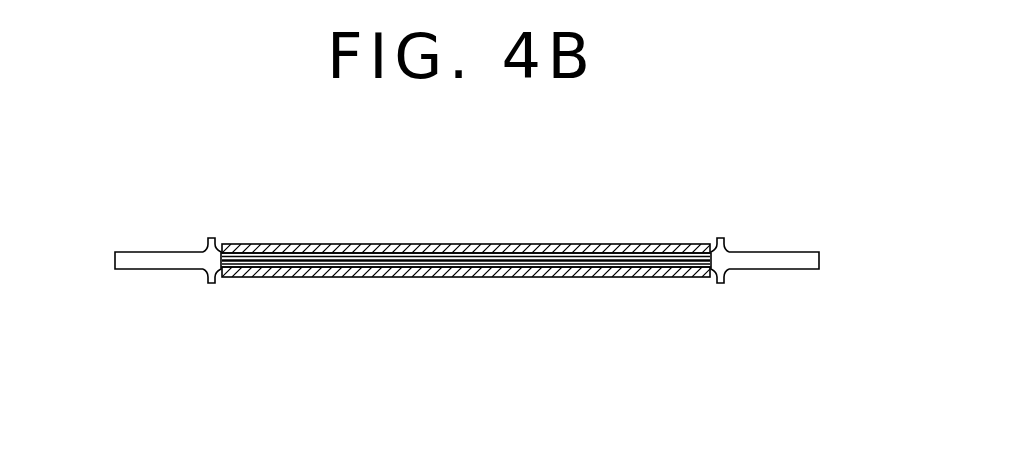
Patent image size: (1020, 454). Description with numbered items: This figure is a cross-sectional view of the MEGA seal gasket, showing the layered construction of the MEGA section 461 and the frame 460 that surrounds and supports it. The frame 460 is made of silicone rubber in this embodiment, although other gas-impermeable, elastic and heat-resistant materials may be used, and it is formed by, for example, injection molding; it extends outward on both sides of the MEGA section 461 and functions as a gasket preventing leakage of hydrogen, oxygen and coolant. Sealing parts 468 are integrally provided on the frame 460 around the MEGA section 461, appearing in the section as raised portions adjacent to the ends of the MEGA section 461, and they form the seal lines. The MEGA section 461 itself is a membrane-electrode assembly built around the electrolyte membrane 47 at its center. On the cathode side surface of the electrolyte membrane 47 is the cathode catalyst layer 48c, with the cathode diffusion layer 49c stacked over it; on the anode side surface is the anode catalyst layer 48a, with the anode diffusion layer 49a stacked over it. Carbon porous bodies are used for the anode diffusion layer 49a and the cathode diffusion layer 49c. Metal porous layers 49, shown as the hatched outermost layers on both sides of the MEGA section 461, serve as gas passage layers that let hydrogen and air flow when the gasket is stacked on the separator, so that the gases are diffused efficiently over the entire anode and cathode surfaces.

The frame 460 is at (810, 252).
The sealing part 468 is at (211, 283).
The MEGA section 461 is at (462, 321).
The metal porous layer 49 is at (297, 277).
The cathode diffusion layer 49c is at (343, 277).
The cathode catalyst layer 48c is at (412, 277).
The electrolyte membrane 47 is at (468, 277).
The anode catalyst layer 48a is at (515, 277).
The anode diffusion layer 49a is at (332, 342).